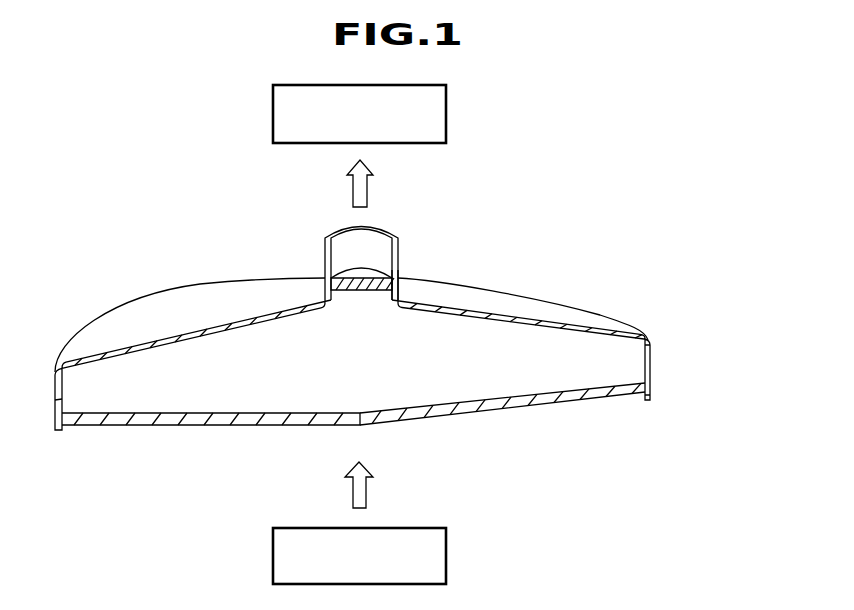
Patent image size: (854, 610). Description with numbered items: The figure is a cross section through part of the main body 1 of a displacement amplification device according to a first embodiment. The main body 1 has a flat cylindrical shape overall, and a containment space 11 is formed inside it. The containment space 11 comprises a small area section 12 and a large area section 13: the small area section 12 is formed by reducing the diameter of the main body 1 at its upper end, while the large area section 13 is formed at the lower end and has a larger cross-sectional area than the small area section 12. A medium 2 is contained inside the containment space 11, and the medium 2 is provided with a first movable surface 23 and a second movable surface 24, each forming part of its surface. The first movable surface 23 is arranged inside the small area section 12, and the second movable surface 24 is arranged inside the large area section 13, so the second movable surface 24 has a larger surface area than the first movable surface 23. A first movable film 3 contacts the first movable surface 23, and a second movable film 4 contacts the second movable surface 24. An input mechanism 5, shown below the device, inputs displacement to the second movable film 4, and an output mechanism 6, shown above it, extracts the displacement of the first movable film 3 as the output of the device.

The main body 1 is at (535, 303).
The medium 2 is at (273, 335).
The first movable film 3 is at (378, 278).
The second movable film 4 is at (135, 418).
The input mechanism 5 is at (446, 553).
The output mechanism 6 is at (446, 112).
The containment space 11 is at (633, 363).
The small area section 12 is at (399, 300).
The large area section 13 is at (644, 373).
The first movable surface 23 is at (341, 292).
The second movable surface 24 is at (237, 408).